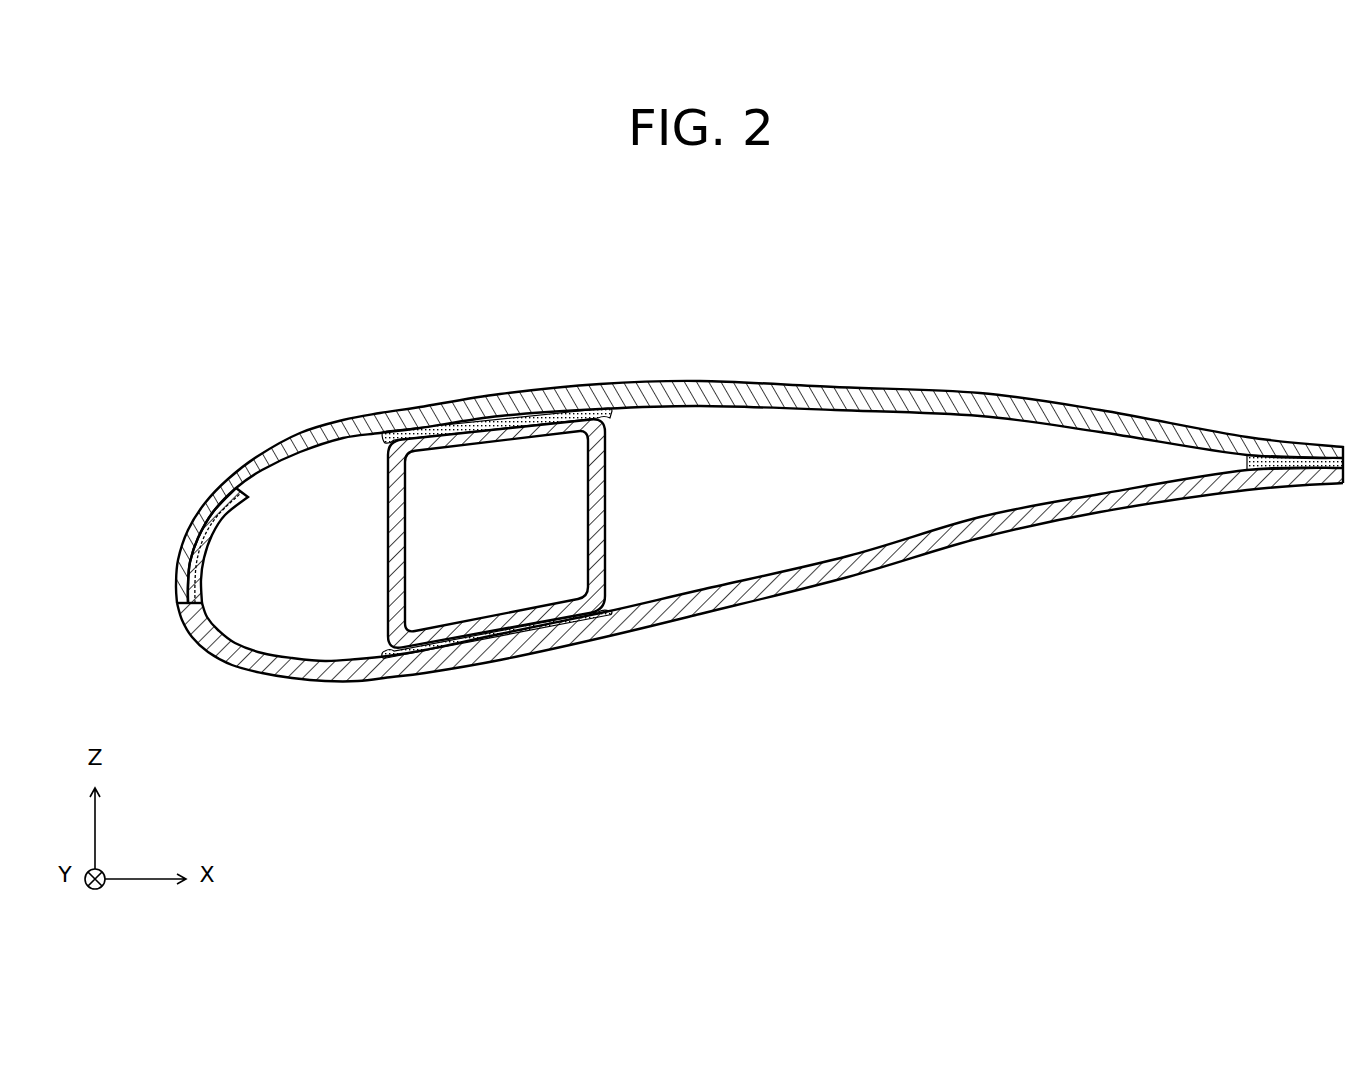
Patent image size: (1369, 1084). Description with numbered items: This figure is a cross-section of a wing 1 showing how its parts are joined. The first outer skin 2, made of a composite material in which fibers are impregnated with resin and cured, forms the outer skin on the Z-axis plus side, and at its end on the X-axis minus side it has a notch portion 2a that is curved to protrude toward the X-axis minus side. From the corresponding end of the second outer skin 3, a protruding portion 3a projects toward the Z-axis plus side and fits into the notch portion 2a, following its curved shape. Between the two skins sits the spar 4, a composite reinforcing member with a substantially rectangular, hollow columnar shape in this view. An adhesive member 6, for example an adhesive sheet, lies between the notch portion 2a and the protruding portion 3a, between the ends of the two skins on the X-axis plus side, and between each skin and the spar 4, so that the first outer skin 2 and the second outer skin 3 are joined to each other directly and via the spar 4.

The wing 1 is at (1196, 278).
The first outer skin 2 is at (837, 366).
The notch portion 2a is at (187, 541).
The second outer skin 3 is at (853, 589).
The protruding portion 3a is at (217, 545).
The spar 4 is at (431, 430).
The adhesive member 6 is at (530, 418).